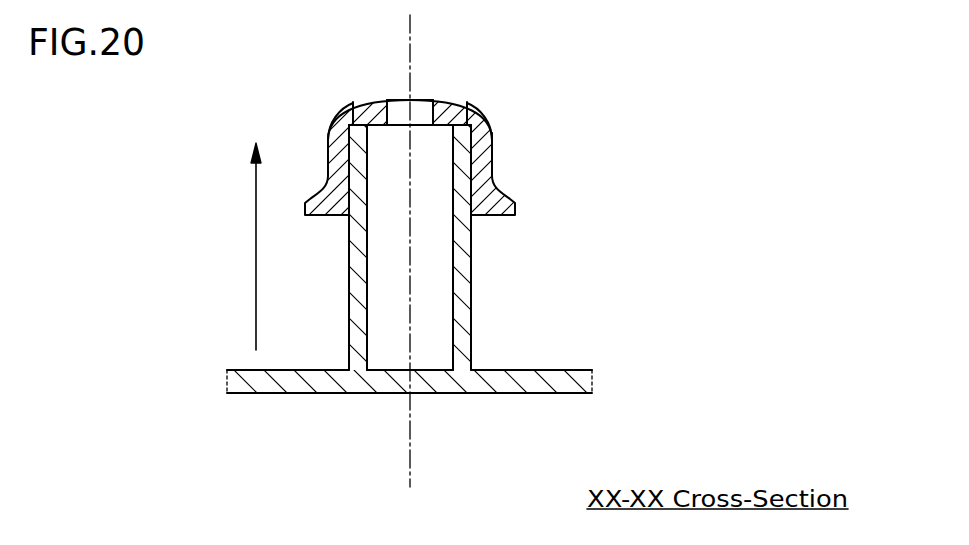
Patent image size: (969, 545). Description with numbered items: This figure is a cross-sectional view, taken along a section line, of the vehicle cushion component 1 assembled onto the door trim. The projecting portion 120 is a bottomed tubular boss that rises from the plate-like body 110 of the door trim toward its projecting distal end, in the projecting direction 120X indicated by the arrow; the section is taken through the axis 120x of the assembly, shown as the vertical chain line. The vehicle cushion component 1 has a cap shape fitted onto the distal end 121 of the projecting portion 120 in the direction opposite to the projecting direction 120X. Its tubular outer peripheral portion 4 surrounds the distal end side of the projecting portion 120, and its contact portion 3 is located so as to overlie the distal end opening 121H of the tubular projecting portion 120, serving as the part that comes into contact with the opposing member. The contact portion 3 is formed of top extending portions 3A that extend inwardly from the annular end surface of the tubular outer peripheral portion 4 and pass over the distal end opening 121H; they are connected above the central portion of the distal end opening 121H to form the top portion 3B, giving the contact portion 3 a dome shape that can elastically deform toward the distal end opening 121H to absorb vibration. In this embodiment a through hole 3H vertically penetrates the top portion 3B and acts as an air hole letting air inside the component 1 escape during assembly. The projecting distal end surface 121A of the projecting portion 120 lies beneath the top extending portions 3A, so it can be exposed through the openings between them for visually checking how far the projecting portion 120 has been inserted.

The vehicle cushion component 1 is at (320, 107).
The distal end 121 is at (465, 142).
The projecting distal end surface 121A is at (358, 106).
The distal end opening 121H is at (366, 196).
The tubular outer peripheral portion 4 is at (487, 157).
The contact portion 3 is at (483, 105).
The top extending portions 3A is at (372, 105).
The through hole 3H is at (402, 108).
The top portion 3B is at (418, 102).
The projecting portion 120 is at (463, 283).
The body 110 is at (533, 370).
The projecting direction 120X is at (256, 227).
The axis 120x is at (410, 450).